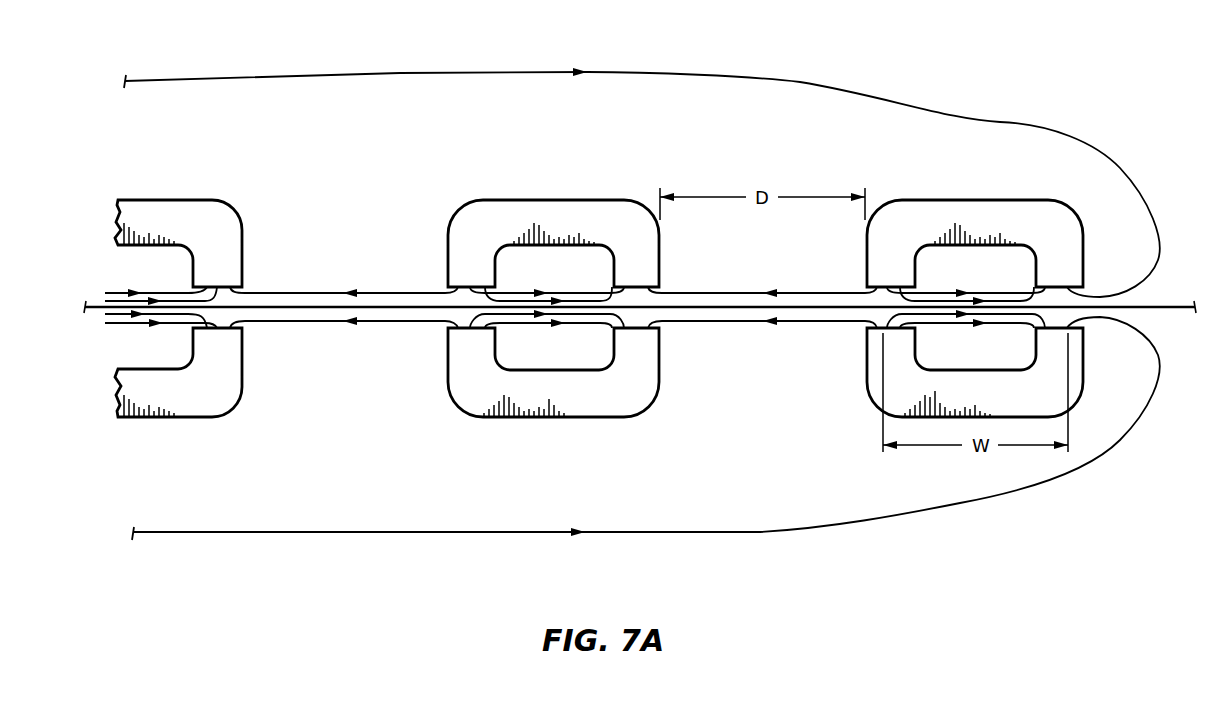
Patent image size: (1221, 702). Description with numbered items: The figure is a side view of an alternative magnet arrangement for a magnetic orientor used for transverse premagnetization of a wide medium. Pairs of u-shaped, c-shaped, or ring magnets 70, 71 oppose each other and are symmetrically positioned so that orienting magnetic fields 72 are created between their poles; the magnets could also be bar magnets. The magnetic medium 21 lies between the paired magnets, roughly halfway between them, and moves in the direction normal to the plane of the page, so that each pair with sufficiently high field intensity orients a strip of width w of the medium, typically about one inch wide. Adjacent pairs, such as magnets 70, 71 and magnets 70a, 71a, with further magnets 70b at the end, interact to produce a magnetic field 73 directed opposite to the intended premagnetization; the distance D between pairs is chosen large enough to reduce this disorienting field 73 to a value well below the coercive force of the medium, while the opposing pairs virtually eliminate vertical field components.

The magnetic medium 21 is at (1172, 306).
The magnet 70 is at (946, 200).
The adjacent magnet 70a is at (531, 200).
The upper end magnet 70b is at (152, 200).
The magnet 71 is at (867, 364).
The adjacent magnet 71a is at (529, 417).
The orienting magnetic field 72 is at (930, 301).
The disorienting magnetic field 73 is at (712, 293).